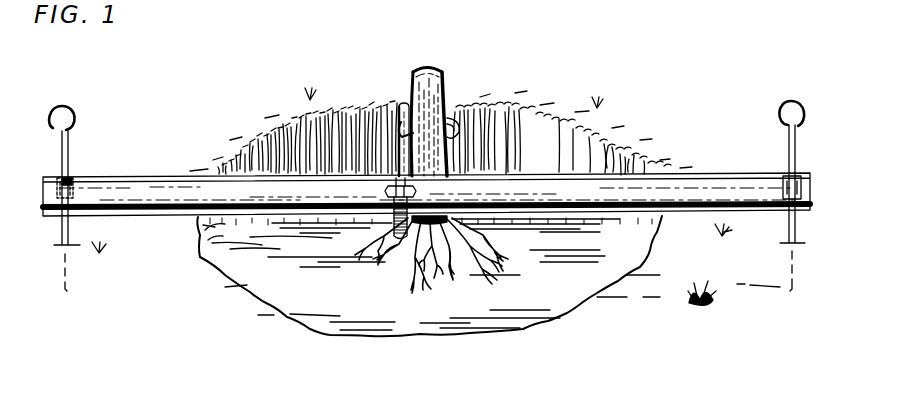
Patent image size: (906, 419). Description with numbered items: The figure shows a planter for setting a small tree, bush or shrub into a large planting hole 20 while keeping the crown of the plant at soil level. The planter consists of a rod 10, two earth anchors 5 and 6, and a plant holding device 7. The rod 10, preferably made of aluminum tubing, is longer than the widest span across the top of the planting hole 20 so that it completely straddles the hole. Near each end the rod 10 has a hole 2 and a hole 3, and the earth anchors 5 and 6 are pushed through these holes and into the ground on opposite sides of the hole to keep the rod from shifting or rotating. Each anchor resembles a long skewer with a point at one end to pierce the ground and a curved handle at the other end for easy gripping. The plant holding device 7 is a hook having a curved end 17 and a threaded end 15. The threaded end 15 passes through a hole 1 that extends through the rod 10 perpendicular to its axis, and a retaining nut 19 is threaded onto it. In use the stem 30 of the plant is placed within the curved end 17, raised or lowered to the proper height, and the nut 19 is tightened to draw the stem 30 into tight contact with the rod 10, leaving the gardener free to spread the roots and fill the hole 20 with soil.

The hole 1 is at (386, 192).
The hole 2 is at (74, 192).
The hole 3 is at (783, 188).
The earth anchor 5 is at (75, 121).
The earth anchor 6 is at (788, 130).
The plant holding device 7 is at (398, 88).
The rod 10 is at (151, 187).
The threaded end 15 is at (395, 233).
The curved end 17 is at (399, 122).
The retaining nut 19 is at (416, 200).
The planting hole 20 is at (330, 325).
The stem 30 is at (447, 88).